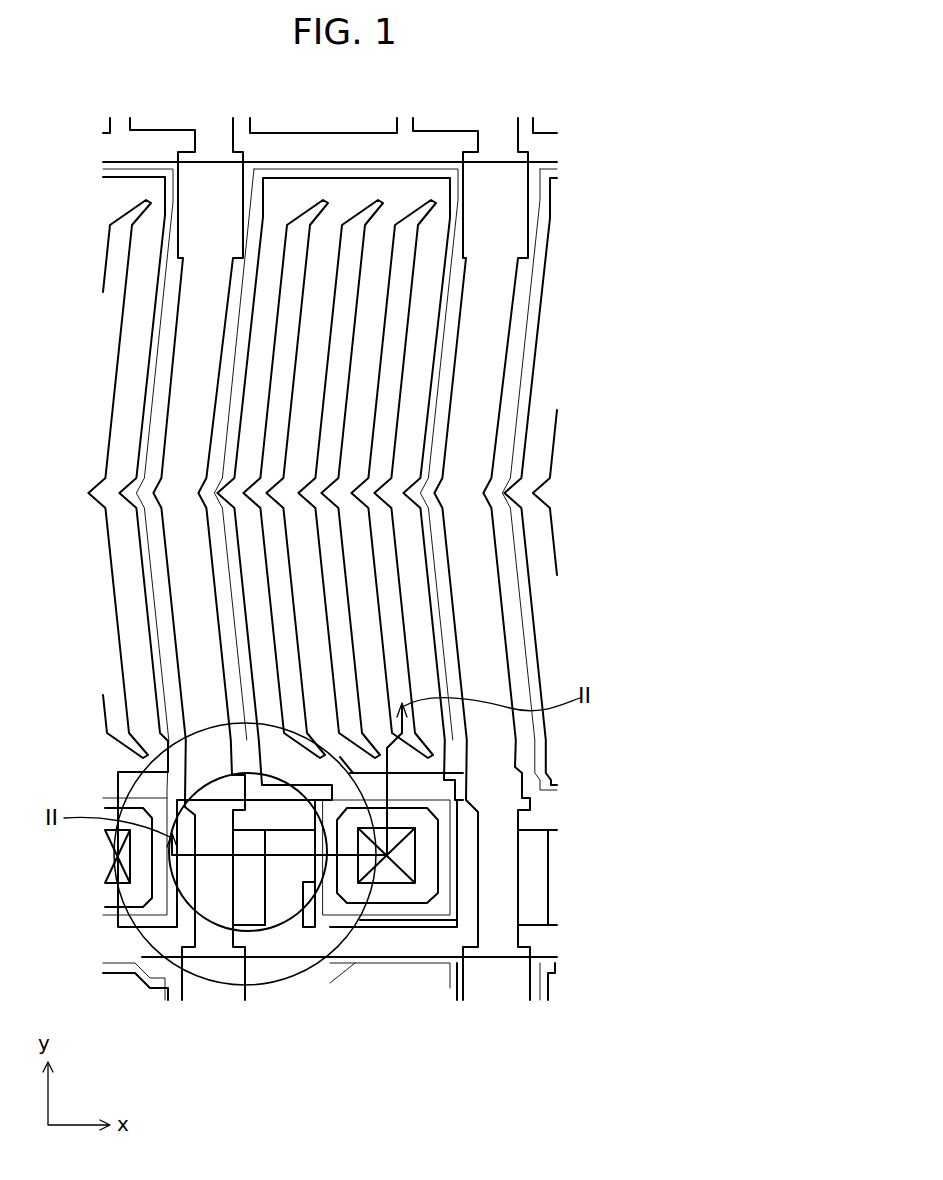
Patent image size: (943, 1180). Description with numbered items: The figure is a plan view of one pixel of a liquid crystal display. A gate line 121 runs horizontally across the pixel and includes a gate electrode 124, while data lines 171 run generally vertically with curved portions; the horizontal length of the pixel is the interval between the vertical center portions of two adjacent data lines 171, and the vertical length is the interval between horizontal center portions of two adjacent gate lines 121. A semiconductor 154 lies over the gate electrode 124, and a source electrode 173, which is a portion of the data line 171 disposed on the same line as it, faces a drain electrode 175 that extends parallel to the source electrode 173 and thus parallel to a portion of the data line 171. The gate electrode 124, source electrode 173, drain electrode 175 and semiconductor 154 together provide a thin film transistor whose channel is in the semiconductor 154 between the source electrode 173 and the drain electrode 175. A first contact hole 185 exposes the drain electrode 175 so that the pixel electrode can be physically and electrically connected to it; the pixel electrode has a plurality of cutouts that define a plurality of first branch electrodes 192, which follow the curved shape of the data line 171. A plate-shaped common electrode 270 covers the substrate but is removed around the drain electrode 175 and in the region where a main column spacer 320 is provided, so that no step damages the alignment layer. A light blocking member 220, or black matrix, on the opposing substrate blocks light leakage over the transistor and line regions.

The gate line 121 is at (435, 932).
The gate electrode 124 is at (175, 852).
The semiconductor 154 is at (250, 930).
The data line 171 is at (160, 530).
The source electrode 173 is at (235, 890).
The drain electrode 175 is at (303, 893).
The first contact hole 185 is at (391, 883).
The first branch electrodes 192 is at (353, 627).
The light blocking member 220 is at (442, 366).
The common electrode 270 is at (438, 772).
The main column spacer 320 is at (213, 927).